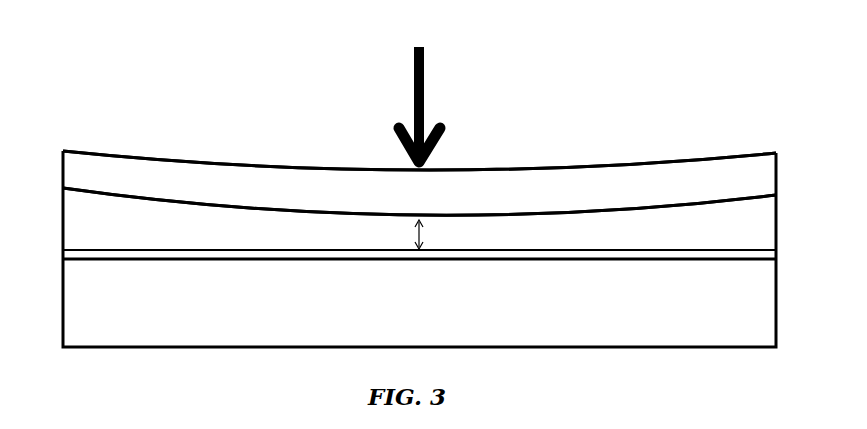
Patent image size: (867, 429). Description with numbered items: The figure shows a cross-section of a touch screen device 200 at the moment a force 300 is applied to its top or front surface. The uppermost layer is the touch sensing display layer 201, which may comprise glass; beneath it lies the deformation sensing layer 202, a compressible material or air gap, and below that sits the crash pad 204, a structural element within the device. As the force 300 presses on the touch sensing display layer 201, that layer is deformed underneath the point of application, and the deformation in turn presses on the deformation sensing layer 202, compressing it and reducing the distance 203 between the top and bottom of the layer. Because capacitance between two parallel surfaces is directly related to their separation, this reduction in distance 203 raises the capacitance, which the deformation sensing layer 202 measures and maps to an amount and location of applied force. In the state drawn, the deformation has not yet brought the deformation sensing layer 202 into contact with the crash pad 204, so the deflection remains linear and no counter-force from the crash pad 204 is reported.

The touch screen device 200 is at (419, 231).
The touch sensing display layer 201 is at (419, 183).
The deformation sensing layer 202 is at (419, 219).
The distance 203 is at (458, 234).
The crash pad 204 is at (399, 257).
The force 300 is at (419, 92).